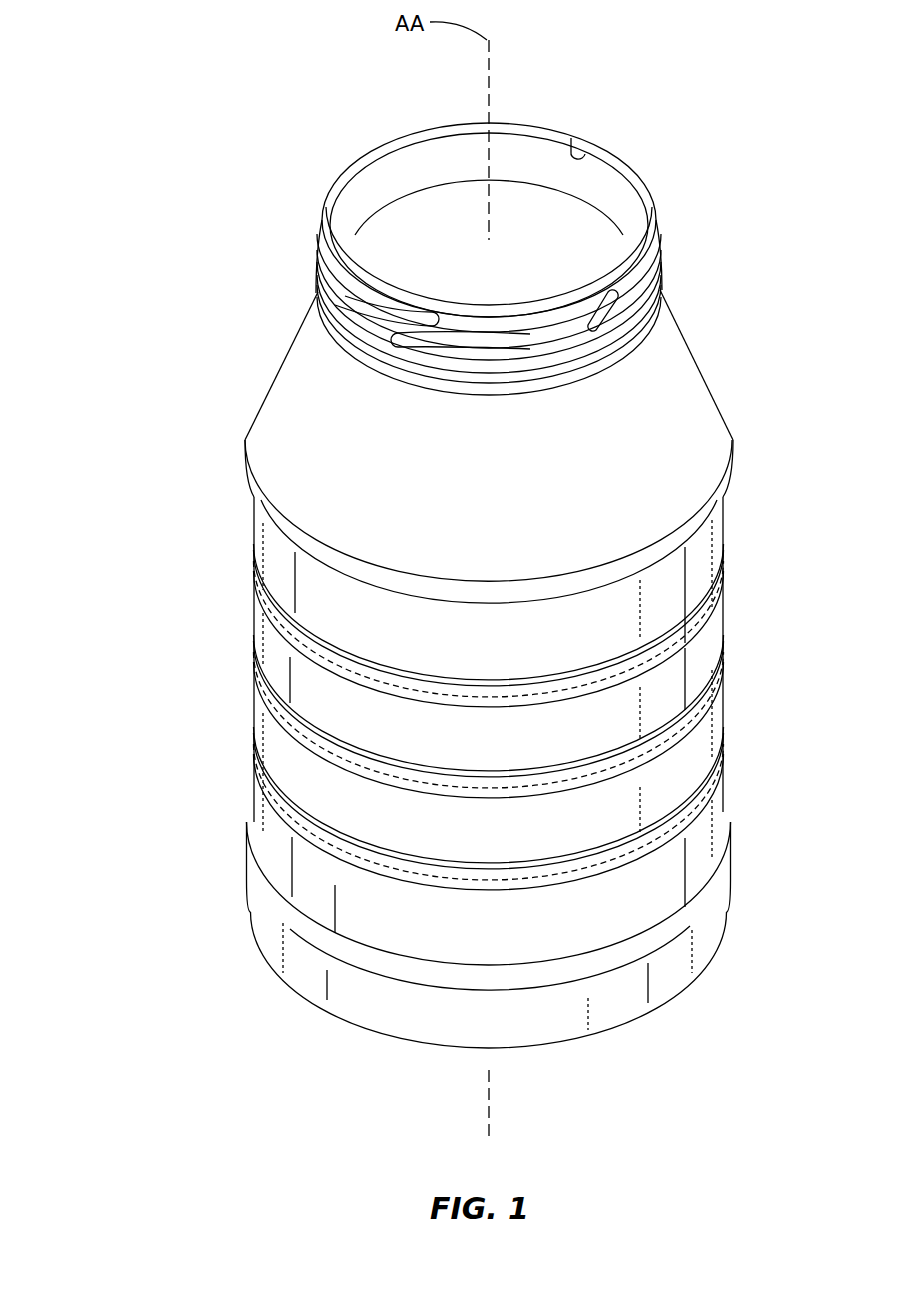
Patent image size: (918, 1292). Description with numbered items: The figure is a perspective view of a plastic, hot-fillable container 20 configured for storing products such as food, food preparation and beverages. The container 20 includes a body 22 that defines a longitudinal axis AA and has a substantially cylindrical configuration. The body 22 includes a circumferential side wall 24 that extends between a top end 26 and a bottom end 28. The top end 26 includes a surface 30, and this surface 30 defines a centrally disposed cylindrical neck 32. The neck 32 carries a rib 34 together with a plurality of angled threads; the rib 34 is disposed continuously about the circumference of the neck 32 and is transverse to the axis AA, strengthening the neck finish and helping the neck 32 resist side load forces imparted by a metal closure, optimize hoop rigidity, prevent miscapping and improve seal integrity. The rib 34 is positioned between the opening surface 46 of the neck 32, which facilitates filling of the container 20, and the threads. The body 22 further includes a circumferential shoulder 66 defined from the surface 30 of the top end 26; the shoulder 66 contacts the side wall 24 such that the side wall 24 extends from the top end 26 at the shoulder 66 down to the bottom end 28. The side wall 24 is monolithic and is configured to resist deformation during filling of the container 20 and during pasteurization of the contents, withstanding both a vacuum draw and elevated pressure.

The container 20 is at (146, 122).
The body 22 is at (245, 438).
The circumferential side wall 24 is at (253, 692).
The top end 26 is at (695, 468).
The bottom end 28 is at (718, 945).
The surface 30 is at (585, 343).
The neck 32 is at (315, 265).
The rib 34 is at (327, 205).
The opening surface 46 is at (572, 140).
The circumferential shoulder 66 is at (250, 492).